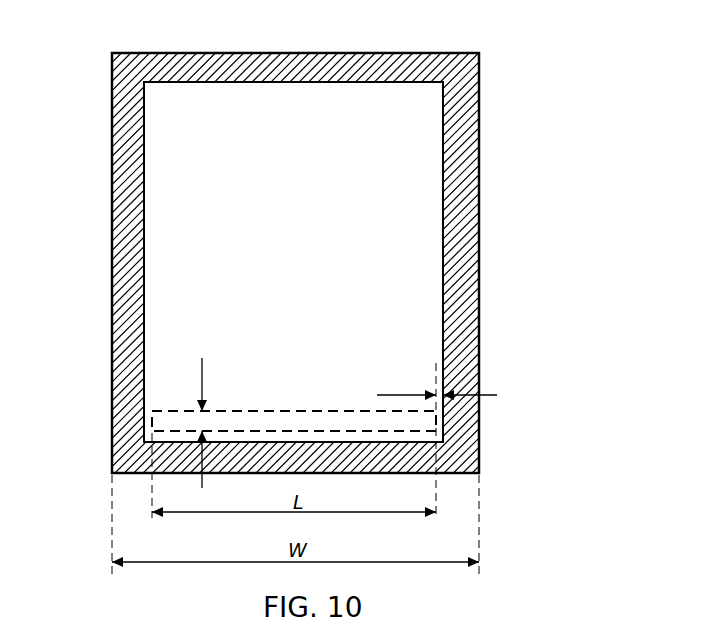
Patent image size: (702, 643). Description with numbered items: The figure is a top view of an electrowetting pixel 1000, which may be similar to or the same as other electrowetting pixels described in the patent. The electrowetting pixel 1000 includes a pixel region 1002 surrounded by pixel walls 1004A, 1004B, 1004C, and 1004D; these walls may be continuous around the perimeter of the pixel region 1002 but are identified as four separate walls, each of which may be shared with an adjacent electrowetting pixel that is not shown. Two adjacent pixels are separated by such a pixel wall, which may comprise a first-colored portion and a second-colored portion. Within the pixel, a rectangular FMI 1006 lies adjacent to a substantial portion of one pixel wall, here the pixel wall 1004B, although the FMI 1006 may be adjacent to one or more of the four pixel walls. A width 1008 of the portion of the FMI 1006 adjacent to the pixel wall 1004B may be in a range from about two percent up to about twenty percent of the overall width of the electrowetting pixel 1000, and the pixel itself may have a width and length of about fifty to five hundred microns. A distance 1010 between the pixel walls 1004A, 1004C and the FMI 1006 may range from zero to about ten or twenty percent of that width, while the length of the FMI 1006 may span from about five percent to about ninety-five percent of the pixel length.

The electrowetting pixel 1000 is at (539, 44).
The pixel region 1002 is at (320, 219).
The pixel wall 1004A is at (479, 340).
The pixel wall 1004B is at (170, 473).
The pixel wall 1004C is at (112, 410).
The pixel wall 1004D is at (112, 115).
The FMI 1006 is at (278, 411).
The width 1008 is at (204, 412).
The distance 1010 is at (461, 394).